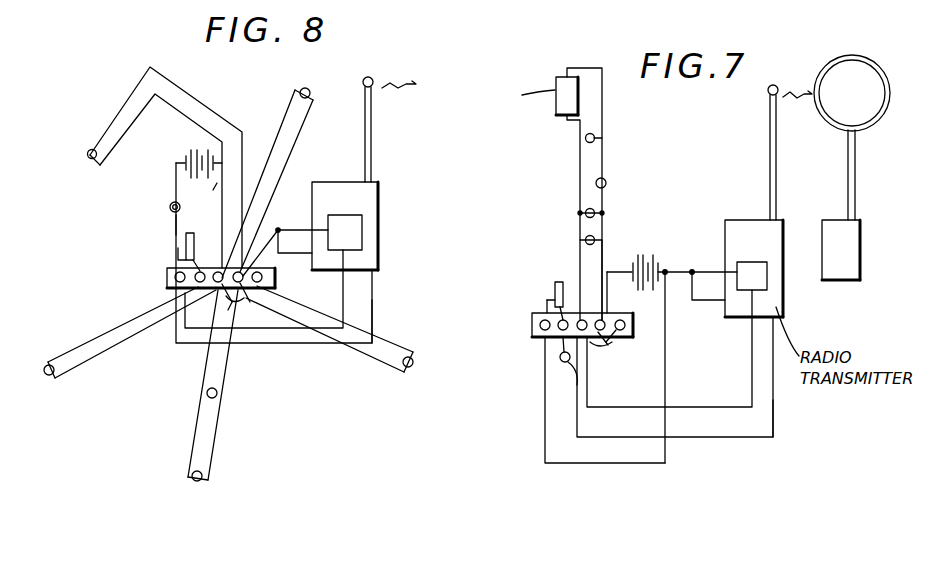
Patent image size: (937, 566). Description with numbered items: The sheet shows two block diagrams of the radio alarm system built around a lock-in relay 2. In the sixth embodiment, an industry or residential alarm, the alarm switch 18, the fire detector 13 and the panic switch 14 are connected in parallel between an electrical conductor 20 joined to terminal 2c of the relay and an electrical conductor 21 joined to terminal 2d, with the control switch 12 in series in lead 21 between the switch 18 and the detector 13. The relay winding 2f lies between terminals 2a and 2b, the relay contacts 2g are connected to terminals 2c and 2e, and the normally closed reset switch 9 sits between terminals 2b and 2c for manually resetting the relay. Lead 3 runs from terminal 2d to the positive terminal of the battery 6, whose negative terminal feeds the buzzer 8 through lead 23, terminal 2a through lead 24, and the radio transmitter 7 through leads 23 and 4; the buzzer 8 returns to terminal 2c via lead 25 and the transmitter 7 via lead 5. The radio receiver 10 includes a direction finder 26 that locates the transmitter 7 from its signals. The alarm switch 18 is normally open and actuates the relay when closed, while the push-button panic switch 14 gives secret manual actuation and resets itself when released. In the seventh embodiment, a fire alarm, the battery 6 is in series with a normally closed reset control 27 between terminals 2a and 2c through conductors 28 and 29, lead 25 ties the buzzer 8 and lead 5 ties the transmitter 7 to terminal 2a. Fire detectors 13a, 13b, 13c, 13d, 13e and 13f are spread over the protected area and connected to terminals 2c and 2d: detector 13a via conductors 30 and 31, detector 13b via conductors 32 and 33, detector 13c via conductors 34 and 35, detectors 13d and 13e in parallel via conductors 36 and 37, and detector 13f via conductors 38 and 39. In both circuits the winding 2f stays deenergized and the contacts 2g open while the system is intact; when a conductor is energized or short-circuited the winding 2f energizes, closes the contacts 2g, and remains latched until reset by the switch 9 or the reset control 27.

In FIG. 8, the lock-in relay 2 is at (165, 291).
In FIG. 7, the lock-in relay 2 is at (533, 333).
In FIG. 8, the terminal of the lock-in relay 2a is at (176, 289).
In FIG. 7, the terminal of the lock-in relay 2a is at (540, 322).
In FIG. 8, the terminal of the lock-in relay 2b is at (202, 270).
In FIG. 7, the terminal of the lock-in relay 2b is at (559, 355).
In FIG. 8, the terminal of the lock-in relay 2c is at (206, 304).
In FIG. 7, the terminal of the lock-in relay 2c is at (583, 320).
In FIG. 8, the terminal of the lock-in relay 2d is at (246, 272).
In FIG. 7, the terminal of the lock-in relay 2d is at (608, 339).
In FIG. 8, the terminal of the lock-in relay 2e is at (262, 277).
In FIG. 7, the terminal of the lock-in relay 2e is at (633, 325).
In FIG. 8, the relay winding 2f is at (178, 249).
In FIG. 7, the relay winding 2f is at (553, 288).
In FIG. 8, the relay contacts 2g is at (238, 322).
In FIG. 7, the relay contacts 2g is at (600, 342).
In FIG. 7, the electrical conductor 3 is at (614, 292).
In FIG. 8, the lead 4 is at (303, 256).
In FIG. 7, the lead 4 is at (706, 305).
In FIG. 8, the lead 5 is at (372, 293).
In FIG. 7, the lead 5 is at (773, 420).
In FIG. 8, the battery 6 is at (188, 148).
In FIG. 7, the battery 6 is at (646, 287).
In FIG. 8, the radio transmitter 7 is at (376, 183).
In FIG. 8, the buzzer 8 is at (345, 215).
In FIG. 7, the buzzer 8 is at (735, 265).
In FIG. 7, the reset switch 9 is at (570, 363).
In FIG. 7, the radio receiver 10 is at (825, 282).
In FIG. 7, the control switch 12 is at (605, 177).
In FIG. 7, the fire detector 13 is at (596, 211).
In FIG. 8, the fire detector 13a is at (311, 88).
In FIG. 7, the fire detector 13a is at (790, 152).
In FIG. 8, the fire detector 13b is at (90, 157).
In FIG. 8, the fire detector 13c is at (46, 377).
In FIG. 8, the fire detector 13d is at (200, 482).
In FIG. 8, the fire detector 13e is at (207, 395).
In FIG. 8, the fire detector 13f is at (412, 366).
In FIG. 7, the panic switch 14 is at (586, 244).
In FIG. 7, the alarm switch 18 is at (591, 133).
In FIG. 7, the electrical conductor 20 is at (580, 146).
In FIG. 7, the electrical conductor 21 is at (599, 262).
In FIG. 8, the lead 23 is at (278, 229).
In FIG. 7, the lead 23 is at (679, 357).
In FIG. 7, the lead 24 is at (683, 406).
In FIG. 8, the lead 25 is at (343, 296).
In FIG. 7, the lead 25 is at (731, 437).
In FIG. 7, the direction finder 26 is at (903, 48).
In FIG. 8, the reset control 27 is at (170, 207).
In FIG. 8, the electrical conductor 28 is at (174, 222).
In FIG. 8, the electrical conductor 29 is at (204, 195).
In FIG. 8, the electrical conductor 30 is at (288, 108).
In FIG. 8, the electrical conductor 31 is at (303, 123).
In FIG. 8, the electrical conductor 32 is at (131, 127).
In FIG. 8, the electrical conductor 33 is at (196, 99).
In FIG. 8, the electrical conductor 34 is at (53, 360).
In FIG. 8, the electrical conductor 35 is at (109, 352).
In FIG. 8, the electrical conductor 36 is at (193, 440).
In FIG. 8, the electrical conductor 37 is at (213, 443).
In FIG. 8, the electrical conductor 38 is at (392, 370).
In FIG. 8, the electrical conductor 39 is at (404, 349).